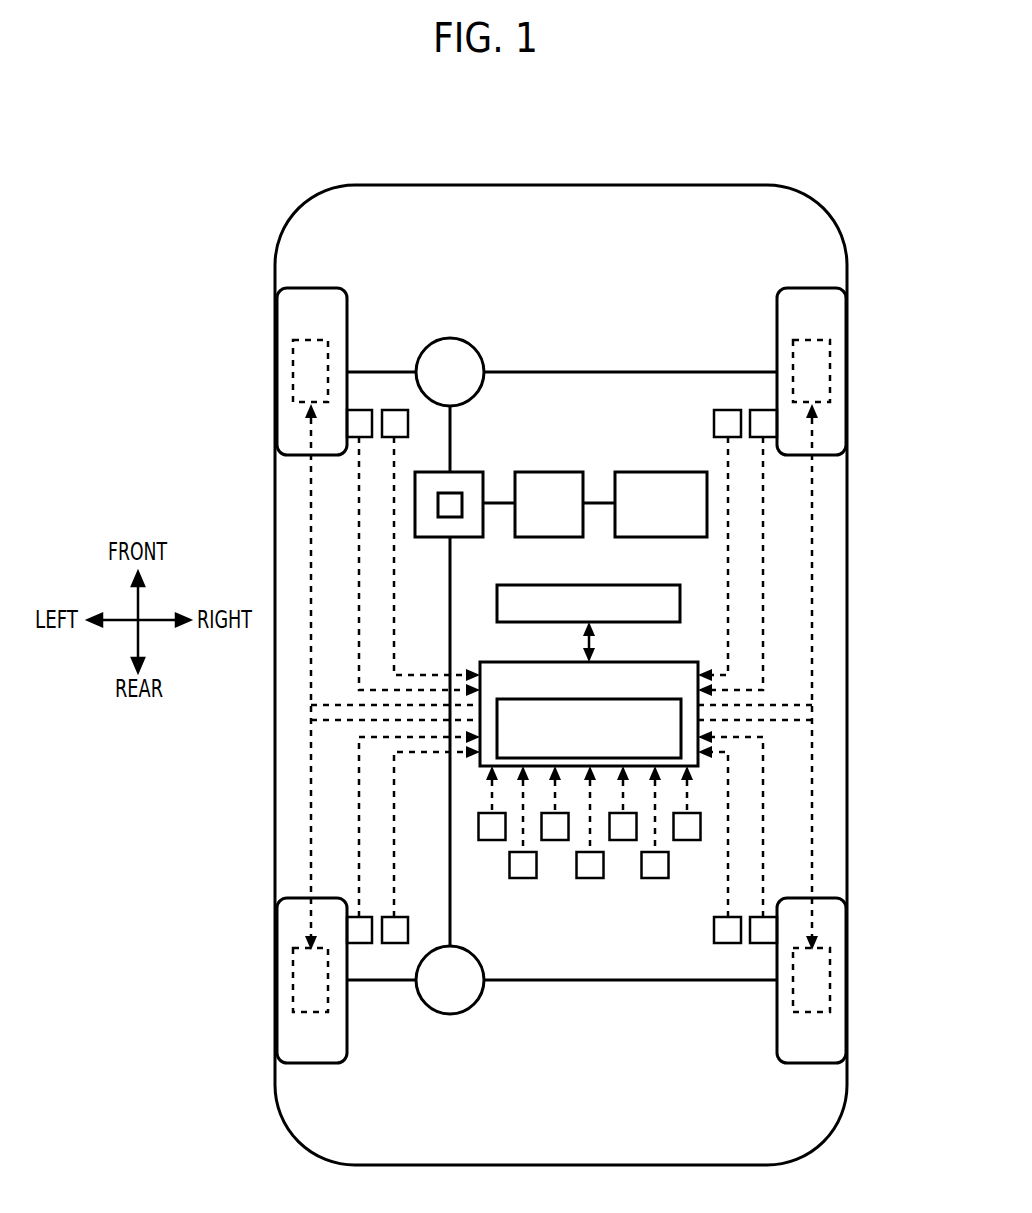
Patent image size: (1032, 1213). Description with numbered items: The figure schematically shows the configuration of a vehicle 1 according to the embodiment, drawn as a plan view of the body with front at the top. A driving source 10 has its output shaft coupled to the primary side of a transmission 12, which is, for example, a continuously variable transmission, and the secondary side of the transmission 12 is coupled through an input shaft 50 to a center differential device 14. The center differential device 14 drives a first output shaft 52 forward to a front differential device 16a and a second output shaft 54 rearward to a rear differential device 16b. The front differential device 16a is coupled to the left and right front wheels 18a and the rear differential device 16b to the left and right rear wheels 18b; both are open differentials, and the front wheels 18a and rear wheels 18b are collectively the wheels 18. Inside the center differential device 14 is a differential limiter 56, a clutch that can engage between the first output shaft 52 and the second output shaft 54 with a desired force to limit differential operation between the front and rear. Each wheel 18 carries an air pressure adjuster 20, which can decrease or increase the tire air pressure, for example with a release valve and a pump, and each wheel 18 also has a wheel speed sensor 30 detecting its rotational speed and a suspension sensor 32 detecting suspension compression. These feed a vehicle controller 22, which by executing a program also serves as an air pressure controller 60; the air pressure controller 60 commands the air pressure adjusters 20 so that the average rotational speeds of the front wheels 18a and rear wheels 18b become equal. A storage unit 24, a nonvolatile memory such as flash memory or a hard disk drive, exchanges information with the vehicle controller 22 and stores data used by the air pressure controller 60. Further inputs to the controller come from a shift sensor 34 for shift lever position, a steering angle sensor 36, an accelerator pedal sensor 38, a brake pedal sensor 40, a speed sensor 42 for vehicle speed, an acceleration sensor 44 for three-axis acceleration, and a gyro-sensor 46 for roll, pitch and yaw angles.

The vehicle 1 is at (567, 162).
The driving source 10 is at (661, 470).
The transmission 12 is at (548, 470).
The center differential device 14 is at (415, 482).
The front differential device 16a is at (446, 338).
The rear differential device 16b is at (450, 1014).
The wheels 18 is at (561, 679).
The front wheels 18a is at (358, 251).
The rear wheels 18b is at (310, 1063).
The air pressure adjuster 20 is at (293, 372).
The vehicle controller 22 is at (497, 662).
The storage unit 24 is at (591, 584).
The wheel speed sensor 30 is at (359, 410).
The suspension sensor 32 is at (394, 410).
The shift sensor 34 is at (492, 840).
The steering angle sensor 36 is at (523, 878).
The accelerator pedal sensor 38 is at (555, 840).
The brake pedal sensor 40 is at (590, 878).
The speed sensor 42 is at (623, 840).
The acceleration sensor 44 is at (655, 878).
The gyro-sensor 46 is at (687, 840).
The input shaft 50 is at (500, 503).
The first output shaft 52 is at (451, 447).
The second output shaft 54 is at (452, 550).
The differential limiter 56 is at (438, 505).
The air pressure controller 60 is at (681, 742).